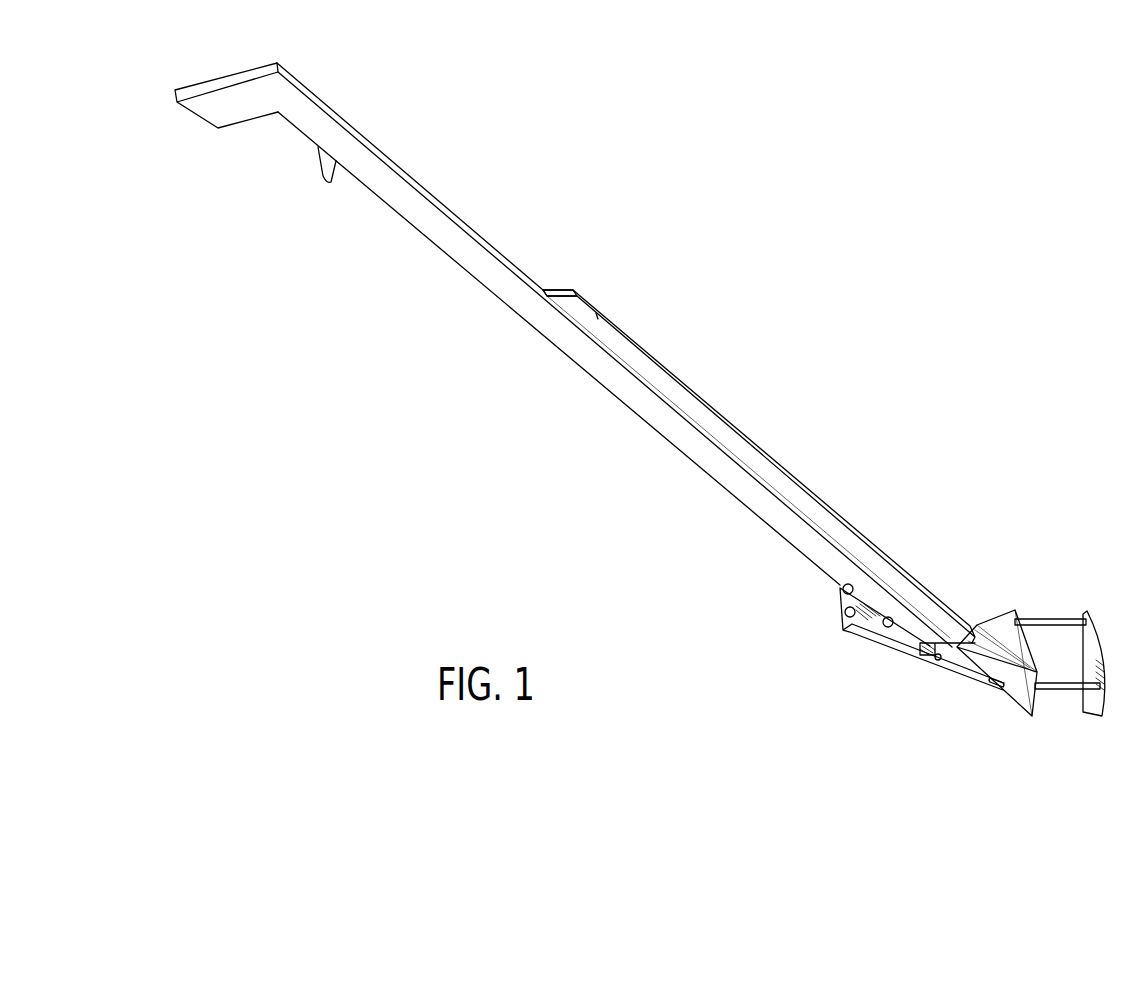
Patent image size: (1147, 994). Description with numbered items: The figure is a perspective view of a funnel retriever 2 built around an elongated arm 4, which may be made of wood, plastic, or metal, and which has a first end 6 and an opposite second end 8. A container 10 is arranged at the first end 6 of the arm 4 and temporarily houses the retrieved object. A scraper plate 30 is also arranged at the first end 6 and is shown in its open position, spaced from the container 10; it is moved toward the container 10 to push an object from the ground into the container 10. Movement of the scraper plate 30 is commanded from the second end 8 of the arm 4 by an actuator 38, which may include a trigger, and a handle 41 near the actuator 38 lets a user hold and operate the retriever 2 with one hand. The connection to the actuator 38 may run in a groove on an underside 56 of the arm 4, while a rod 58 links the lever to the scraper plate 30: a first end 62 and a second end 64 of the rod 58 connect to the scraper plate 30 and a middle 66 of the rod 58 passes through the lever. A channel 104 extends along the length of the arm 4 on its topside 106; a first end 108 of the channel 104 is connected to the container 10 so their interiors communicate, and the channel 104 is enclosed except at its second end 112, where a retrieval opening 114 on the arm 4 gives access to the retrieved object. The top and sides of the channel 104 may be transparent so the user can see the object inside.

The funnel retriever 2 is at (829, 292).
The elongated arm 4 is at (440, 222).
The first end 6 is at (971, 589).
The second end 8 is at (346, 82).
The container 10 is at (1008, 690).
The scraper plate 30 is at (1100, 641).
The actuator 38 is at (327, 170).
The handle 41 is at (232, 100).
The underside 56 is at (542, 340).
The rod 58 is at (1058, 683).
The first end 62 is at (1082, 697).
The second end 64 is at (1067, 616).
The middle 66 is at (882, 637).
The channel 104 is at (704, 413).
The topside 106 is at (480, 230).
The first end 108 is at (966, 622).
The second end 112 is at (599, 315).
The retrieval opening 114 is at (587, 295).